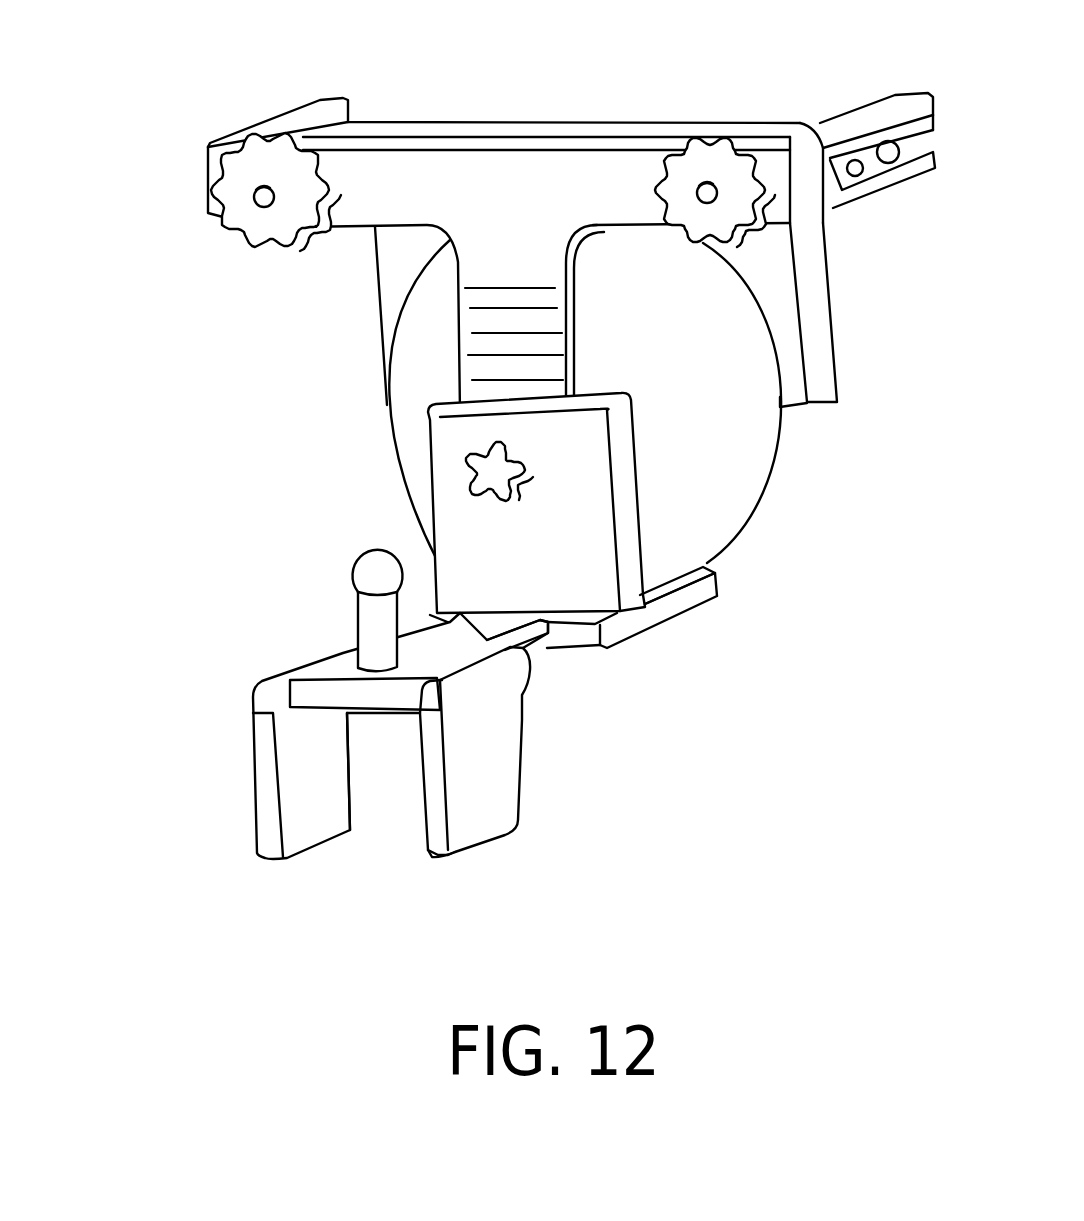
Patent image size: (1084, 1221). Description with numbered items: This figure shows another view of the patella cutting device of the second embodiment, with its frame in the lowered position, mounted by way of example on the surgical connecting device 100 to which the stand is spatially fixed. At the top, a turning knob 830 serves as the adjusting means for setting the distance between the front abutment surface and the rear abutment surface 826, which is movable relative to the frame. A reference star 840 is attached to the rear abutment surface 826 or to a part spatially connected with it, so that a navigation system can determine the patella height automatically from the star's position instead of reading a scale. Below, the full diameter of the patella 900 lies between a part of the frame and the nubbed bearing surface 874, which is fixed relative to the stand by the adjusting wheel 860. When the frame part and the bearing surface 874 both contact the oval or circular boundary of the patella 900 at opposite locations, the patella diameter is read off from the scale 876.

The connecting device 100 is at (265, 787).
The rear abutment surface 826 is at (783, 317).
The turning knob 830 is at (222, 179).
The reference star 840 is at (716, 158).
The adjusting wheel 860 is at (478, 478).
The bearing surface 874 is at (468, 289).
The scale 876 is at (488, 360).
The patella 900 is at (725, 462).